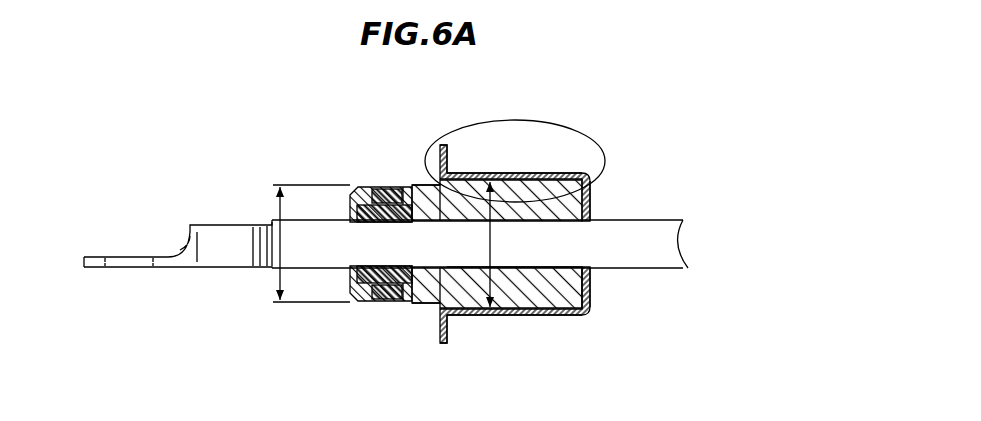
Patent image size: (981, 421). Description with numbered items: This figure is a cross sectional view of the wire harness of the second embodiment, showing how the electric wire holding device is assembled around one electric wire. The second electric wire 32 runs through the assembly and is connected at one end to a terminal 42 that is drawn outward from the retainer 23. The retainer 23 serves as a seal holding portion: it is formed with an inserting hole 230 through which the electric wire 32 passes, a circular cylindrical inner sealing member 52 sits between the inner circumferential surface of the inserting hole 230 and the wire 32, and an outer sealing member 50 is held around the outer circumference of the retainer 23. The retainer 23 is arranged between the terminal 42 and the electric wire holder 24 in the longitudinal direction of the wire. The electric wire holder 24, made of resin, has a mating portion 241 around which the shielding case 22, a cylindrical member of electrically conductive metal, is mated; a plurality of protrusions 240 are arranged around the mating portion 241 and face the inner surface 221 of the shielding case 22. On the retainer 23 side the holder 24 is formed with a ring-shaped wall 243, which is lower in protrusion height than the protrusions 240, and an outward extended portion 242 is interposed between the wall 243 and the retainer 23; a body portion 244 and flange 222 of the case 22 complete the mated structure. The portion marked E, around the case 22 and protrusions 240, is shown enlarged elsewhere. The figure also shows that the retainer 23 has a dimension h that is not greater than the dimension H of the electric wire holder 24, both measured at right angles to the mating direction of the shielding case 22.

The shielding case 22 is at (597, 303).
The top plate portion of cover 221 is at (563, 175).
The flange portion of cover 222 is at (443, 150).
The retainer 23 is at (402, 187).
The electric wire holder 24 is at (427, 312).
The protrusions 240 is at (558, 316).
The mating portion 241 is at (572, 208).
The outward extended portion 242 is at (428, 197).
The wall 243 is at (452, 312).
The body portion 244 is at (528, 272).
The second electric wire 32 is at (678, 245).
The terminal 42 is at (130, 260).
The outer sealing member 50 is at (380, 188).
The inner sealing member 52 is at (357, 212).
The inserting hole 230 is at (345, 271).
The portion E is at (528, 118).
The dimension h is at (311, 243).
The dimension H is at (497, 244).